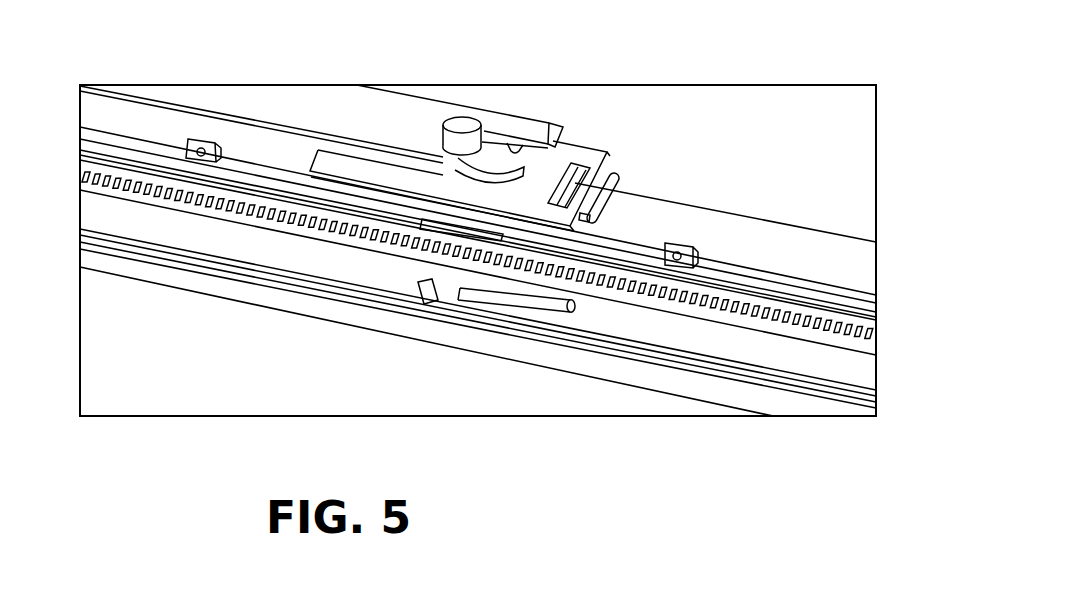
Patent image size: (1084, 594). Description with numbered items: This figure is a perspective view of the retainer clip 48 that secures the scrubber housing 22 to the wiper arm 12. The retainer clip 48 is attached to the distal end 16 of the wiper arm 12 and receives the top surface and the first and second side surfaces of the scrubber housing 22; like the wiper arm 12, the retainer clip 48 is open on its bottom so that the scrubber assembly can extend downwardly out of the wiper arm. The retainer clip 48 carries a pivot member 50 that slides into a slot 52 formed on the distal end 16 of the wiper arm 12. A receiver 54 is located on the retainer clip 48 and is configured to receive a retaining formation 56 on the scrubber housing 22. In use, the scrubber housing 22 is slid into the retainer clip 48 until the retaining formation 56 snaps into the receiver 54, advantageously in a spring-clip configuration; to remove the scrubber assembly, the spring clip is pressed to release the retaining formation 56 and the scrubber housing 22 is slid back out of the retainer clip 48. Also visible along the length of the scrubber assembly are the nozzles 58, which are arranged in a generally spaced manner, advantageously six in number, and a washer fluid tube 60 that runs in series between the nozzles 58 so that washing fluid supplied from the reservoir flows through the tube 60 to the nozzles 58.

The wiper arm 12 is at (427, 98).
The distal end 16 is at (566, 133).
The scrubber housing 22 is at (812, 237).
The retainer clip 48 is at (567, 157).
The pivot member 50 is at (455, 148).
The slot 52 is at (522, 140).
The receiver 54 is at (583, 165).
The retaining formation 56 is at (628, 168).
The nozzle 58 is at (212, 148).
The washer fluid tube 60 is at (633, 245).